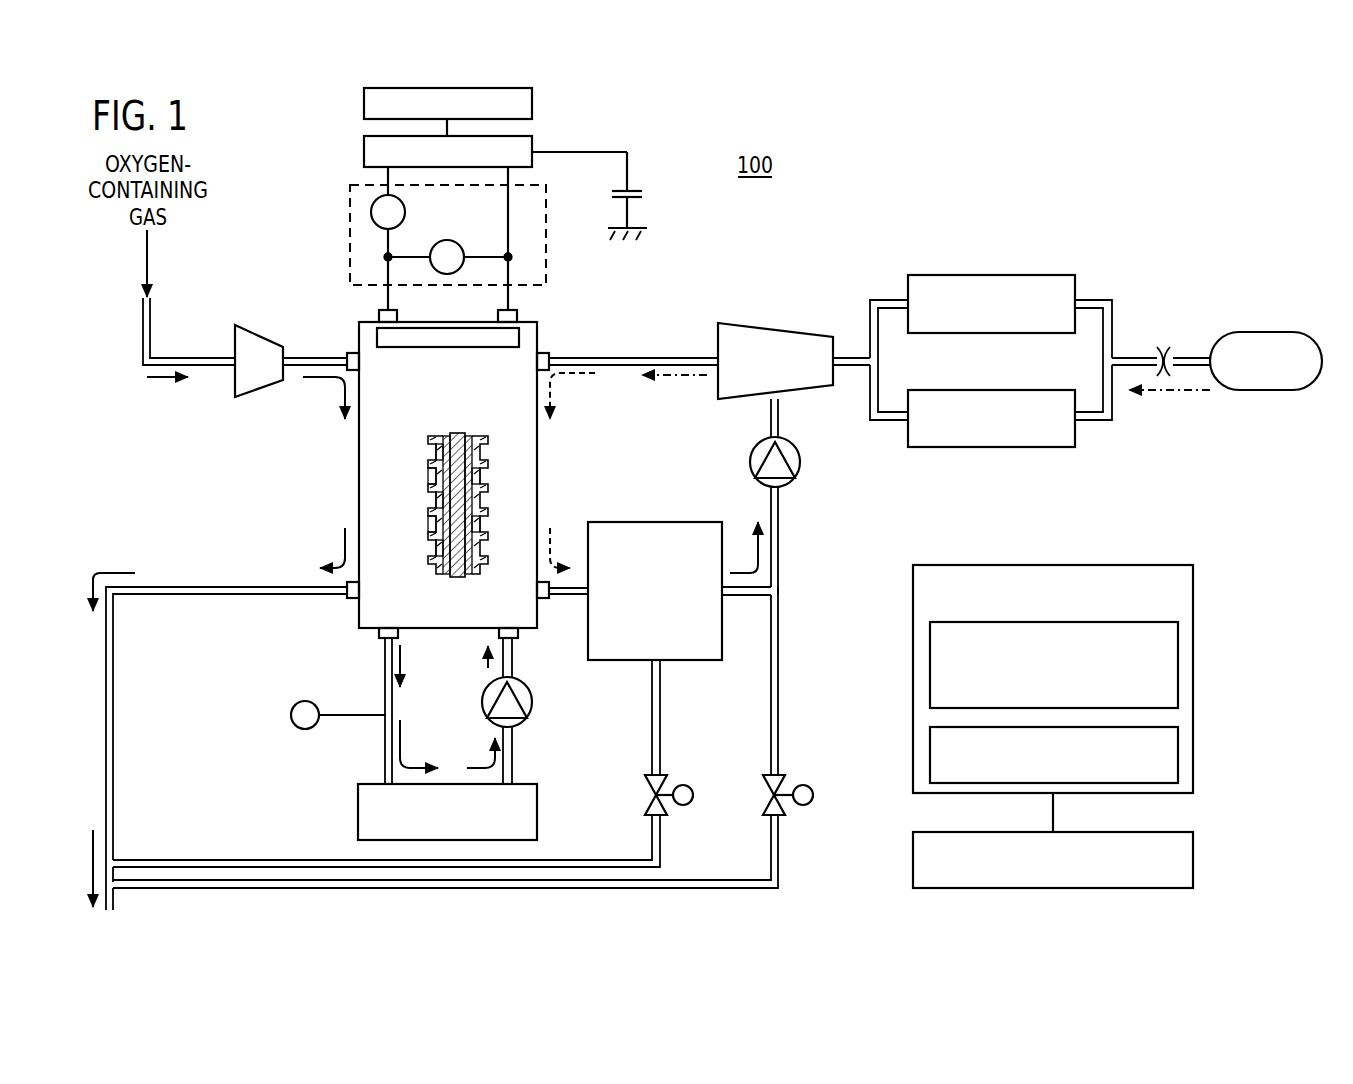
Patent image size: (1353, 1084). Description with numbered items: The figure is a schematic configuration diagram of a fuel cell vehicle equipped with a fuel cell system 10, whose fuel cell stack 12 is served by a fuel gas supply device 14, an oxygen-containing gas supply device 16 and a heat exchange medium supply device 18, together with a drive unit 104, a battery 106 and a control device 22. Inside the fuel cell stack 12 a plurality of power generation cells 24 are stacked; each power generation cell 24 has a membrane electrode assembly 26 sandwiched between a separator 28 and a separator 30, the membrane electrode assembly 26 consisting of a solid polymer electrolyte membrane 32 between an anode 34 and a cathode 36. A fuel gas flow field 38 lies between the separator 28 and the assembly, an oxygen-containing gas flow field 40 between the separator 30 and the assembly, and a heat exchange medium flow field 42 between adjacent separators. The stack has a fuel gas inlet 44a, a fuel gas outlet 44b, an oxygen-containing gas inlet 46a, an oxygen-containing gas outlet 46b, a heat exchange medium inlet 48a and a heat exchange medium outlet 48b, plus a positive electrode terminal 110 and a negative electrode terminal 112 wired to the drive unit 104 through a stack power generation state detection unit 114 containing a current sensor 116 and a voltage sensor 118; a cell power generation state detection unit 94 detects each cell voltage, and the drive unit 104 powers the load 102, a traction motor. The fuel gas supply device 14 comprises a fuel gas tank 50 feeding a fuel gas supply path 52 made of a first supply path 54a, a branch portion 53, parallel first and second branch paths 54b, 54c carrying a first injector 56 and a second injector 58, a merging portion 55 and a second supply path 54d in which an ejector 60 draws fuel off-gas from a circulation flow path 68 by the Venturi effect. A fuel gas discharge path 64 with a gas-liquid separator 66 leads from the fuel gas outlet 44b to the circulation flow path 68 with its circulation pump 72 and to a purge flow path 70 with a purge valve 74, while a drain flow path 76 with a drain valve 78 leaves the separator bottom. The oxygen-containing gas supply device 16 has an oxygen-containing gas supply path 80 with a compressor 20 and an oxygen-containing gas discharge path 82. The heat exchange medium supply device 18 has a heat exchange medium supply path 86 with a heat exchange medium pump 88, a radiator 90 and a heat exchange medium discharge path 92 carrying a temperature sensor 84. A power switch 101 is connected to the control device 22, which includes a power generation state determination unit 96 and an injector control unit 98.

The fuel cell system 10 is at (1224, 232).
The fuel cell stack 12 is at (459, 497).
The fuel gas supply device 14 is at (1134, 249).
The oxygen-containing gas supply device 16 is at (212, 302).
The heat exchange medium supply device 18 is at (350, 824).
The compressor 20 is at (258, 388).
The control device 22 is at (1077, 657).
The power generation cell 24 is at (495, 490).
The membrane electrode assembly 26 is at (460, 465).
The separator 28 is at (488, 466).
The separator 30 is at (436, 453).
The solid polymer electrolyte membrane 32 is at (458, 433).
The anode 34 is at (487, 482).
The cathode 36 is at (448, 434).
The fuel gas flow field 38 is at (476, 504).
The oxygen-containing gas flow field 40 is at (443, 467).
The heat exchange medium flow field 42 is at (428, 528).
The fuel gas inlet 44a is at (550, 350).
The fuel gas outlet 44b is at (549, 600).
The oxygen-containing gas inlet 46a is at (351, 350).
The oxygen-containing gas outlet 46b is at (351, 600).
The heat exchange medium inlet 48a is at (488, 638).
The heat exchange medium outlet 48b is at (378, 642).
The fuel gas tank 50 is at (1277, 333).
The fuel gas supply path 52 is at (1202, 297).
The branch portion 53 is at (1103, 363).
The first supply path 54a is at (1136, 356).
The first branch path 54b is at (1093, 300).
The second branch path 54c is at (1094, 422).
The second supply path 54d is at (666, 356).
The merging portion 55 is at (878, 363).
The first injector 56 is at (1042, 275).
The second injector 58 is at (1040, 448).
The ejector 60 is at (778, 332).
The fuel gas discharge path 64 is at (742, 597).
The gas-liquid separator 66 is at (665, 522).
The circulation flow path 68 is at (782, 526).
The purge flow path 70 is at (782, 625).
The circulation pump 72 is at (801, 462).
The purge valve 74 is at (803, 785).
The drain flow path 76 is at (200, 860).
The drain valve 78 is at (686, 785).
The oxygen-containing gas supply path 80 is at (186, 357).
The oxygen-containing gas discharge path 82 is at (273, 596).
The temperature sensor 84 is at (296, 705).
The heat exchange medium supply path 86 is at (514, 661).
The heat exchange medium pump 88 is at (533, 703).
The radiator 90 is at (358, 797).
The heat exchange medium discharge path 92 is at (385, 738).
The cell power generation state detection unit 94 is at (414, 340).
The power generation state determination unit 96 is at (1178, 667).
The injector control unit 98 is at (1178, 742).
The power switch 101 is at (1193, 857).
The load 102 is at (364, 106).
The drive unit 104 is at (364, 155).
The battery 106 is at (640, 195).
The positive electrode terminal 110 is at (380, 312).
The negative electrode terminal 112 is at (517, 312).
The stack power generation state detection unit 114 is at (405, 238).
The current sensor 116 is at (371, 213).
The voltage sensor 118 is at (447, 240).